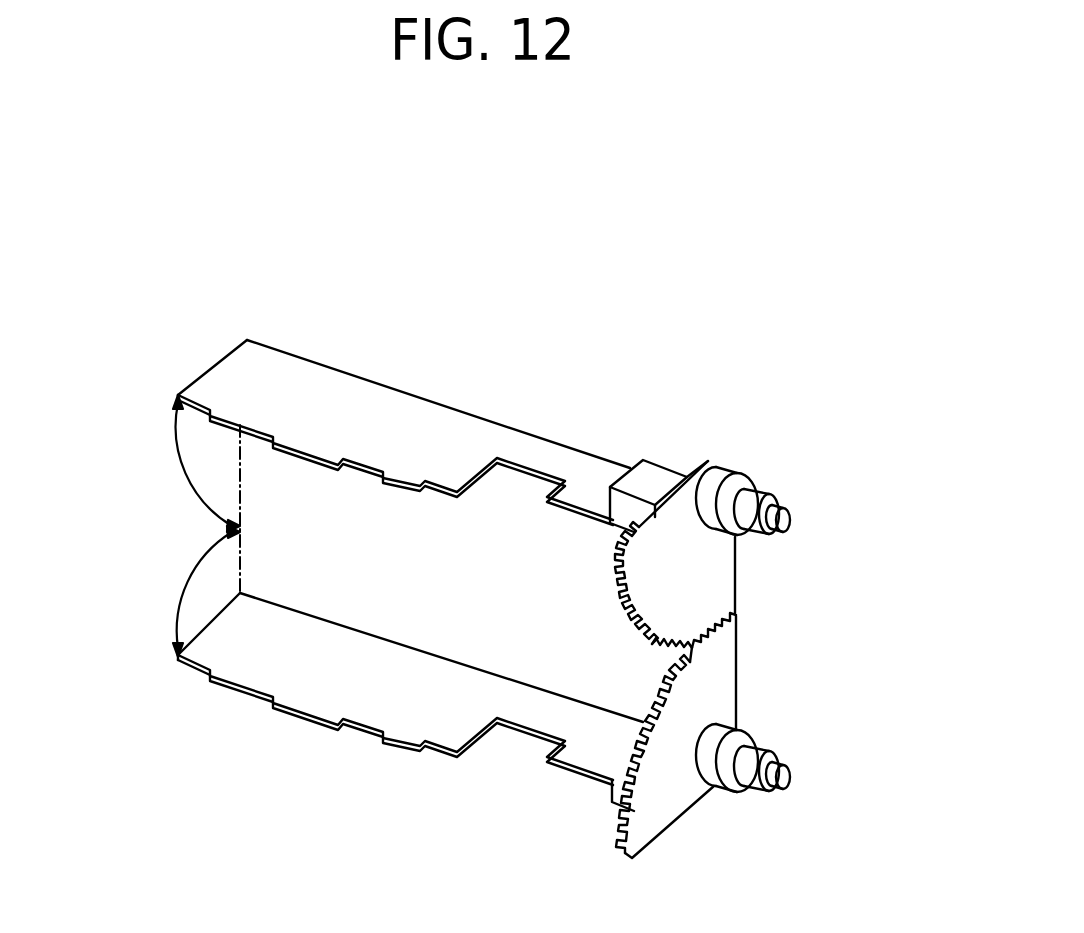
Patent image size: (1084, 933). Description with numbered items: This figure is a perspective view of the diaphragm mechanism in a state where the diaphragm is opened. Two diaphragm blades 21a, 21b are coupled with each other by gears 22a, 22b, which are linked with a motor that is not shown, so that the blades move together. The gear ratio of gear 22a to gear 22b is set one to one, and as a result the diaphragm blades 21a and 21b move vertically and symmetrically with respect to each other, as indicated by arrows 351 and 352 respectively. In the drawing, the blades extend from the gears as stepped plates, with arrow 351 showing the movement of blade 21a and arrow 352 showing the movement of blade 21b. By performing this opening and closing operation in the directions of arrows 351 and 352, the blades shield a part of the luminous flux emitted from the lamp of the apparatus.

The diaphragm blade 21a is at (383, 415).
The diaphragm blade 21b is at (327, 693).
The gear 22a is at (683, 590).
The gear 22b is at (693, 687).
The arrow 351 is at (187, 475).
The arrow 352 is at (183, 576).